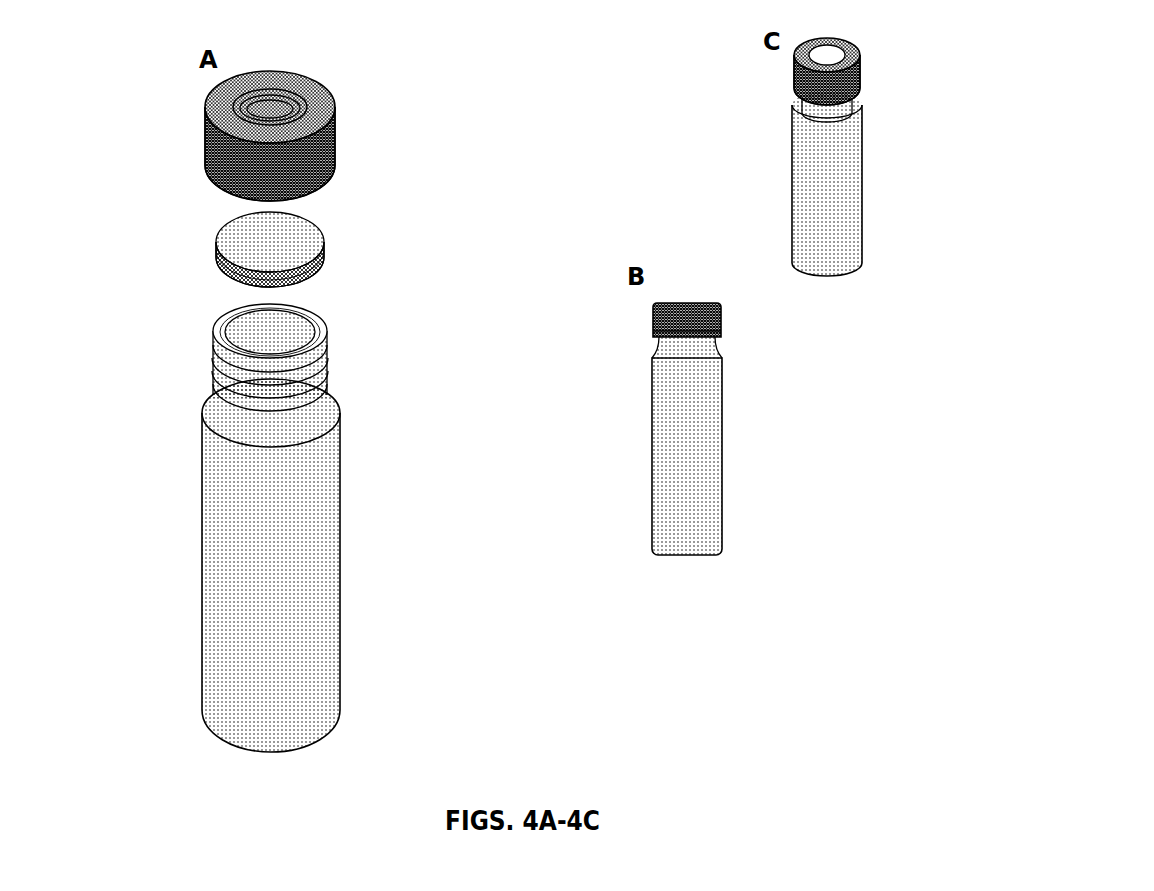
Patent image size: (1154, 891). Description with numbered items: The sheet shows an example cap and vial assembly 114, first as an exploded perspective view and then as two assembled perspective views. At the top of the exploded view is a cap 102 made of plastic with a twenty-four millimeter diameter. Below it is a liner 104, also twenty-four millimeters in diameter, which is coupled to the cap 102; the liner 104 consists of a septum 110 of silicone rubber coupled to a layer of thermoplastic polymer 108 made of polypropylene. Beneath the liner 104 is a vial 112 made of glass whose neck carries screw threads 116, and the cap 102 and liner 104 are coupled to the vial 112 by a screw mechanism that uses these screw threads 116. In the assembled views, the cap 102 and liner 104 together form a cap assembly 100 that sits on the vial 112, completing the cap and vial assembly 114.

In FIG. 4B, the cap assembly 100 is at (682, 420).
In FIG. 4C, the cap assembly 100 is at (826, 157).
In FIG. 4A, the cap 102 is at (207, 125).
In FIG. 4B, the cap 102 is at (651, 315).
In FIG. 4C, the cap 102 is at (788, 77).
In FIG. 4A, the liner 104 is at (262, 246).
In FIG. 4C, the liner 104 is at (803, 52).
In FIG. 4A, the layer of thermoplastic polymer 108 is at (217, 271).
In FIG. 4A, the septum 110 is at (250, 232).
In FIG. 4A, the vial 112 is at (205, 528).
In FIG. 4B, the vial 112 is at (724, 430).
In FIG. 4C, the vial 112 is at (864, 182).
In FIG. 4A, the cap and vial assembly 114 is at (264, 528).
In FIG. 4B, the cap and vial assembly 114 is at (689, 446).
In FIG. 4C, the cap and vial assembly 114 is at (834, 184).
In FIG. 4A, the screw threads 116 is at (208, 344).